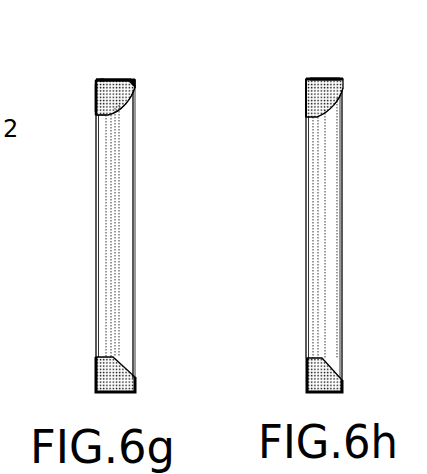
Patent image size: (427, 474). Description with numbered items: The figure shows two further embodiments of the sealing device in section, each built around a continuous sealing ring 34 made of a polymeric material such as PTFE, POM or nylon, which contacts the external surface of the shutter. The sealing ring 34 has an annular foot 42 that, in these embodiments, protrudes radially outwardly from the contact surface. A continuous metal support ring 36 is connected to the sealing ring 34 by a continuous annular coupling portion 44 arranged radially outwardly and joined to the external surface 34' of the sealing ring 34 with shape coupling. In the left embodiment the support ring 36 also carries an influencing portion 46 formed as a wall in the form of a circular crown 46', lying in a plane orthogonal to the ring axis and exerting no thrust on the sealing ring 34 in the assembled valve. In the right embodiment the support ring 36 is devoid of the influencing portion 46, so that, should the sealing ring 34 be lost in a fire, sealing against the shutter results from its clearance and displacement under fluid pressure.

In FIG. 6G, the sealing ring 34 is at (146, 231).
In FIG. 6H, the sealing ring 34 is at (277, 235).
In FIG. 6G, the external surface of the sealing ring 34' is at (166, 133).
In FIG. 6H, the external surface of the sealing ring 34' is at (358, 148).
In FIG. 6G, the support ring 36 is at (89, 108).
In FIG. 6G, the annular foot 42 is at (138, 91).
In FIG. 6H, the annular foot 42 is at (345, 83).
In FIG. 6G, the coupling portion 44 is at (121, 79).
In FIG. 6H, the coupling portion 44 is at (324, 78).
In FIG. 6G, the influencing portion 46 is at (48, 81).
In FIG. 6G, the wall in the form of a circular crown 46' is at (79, 48).